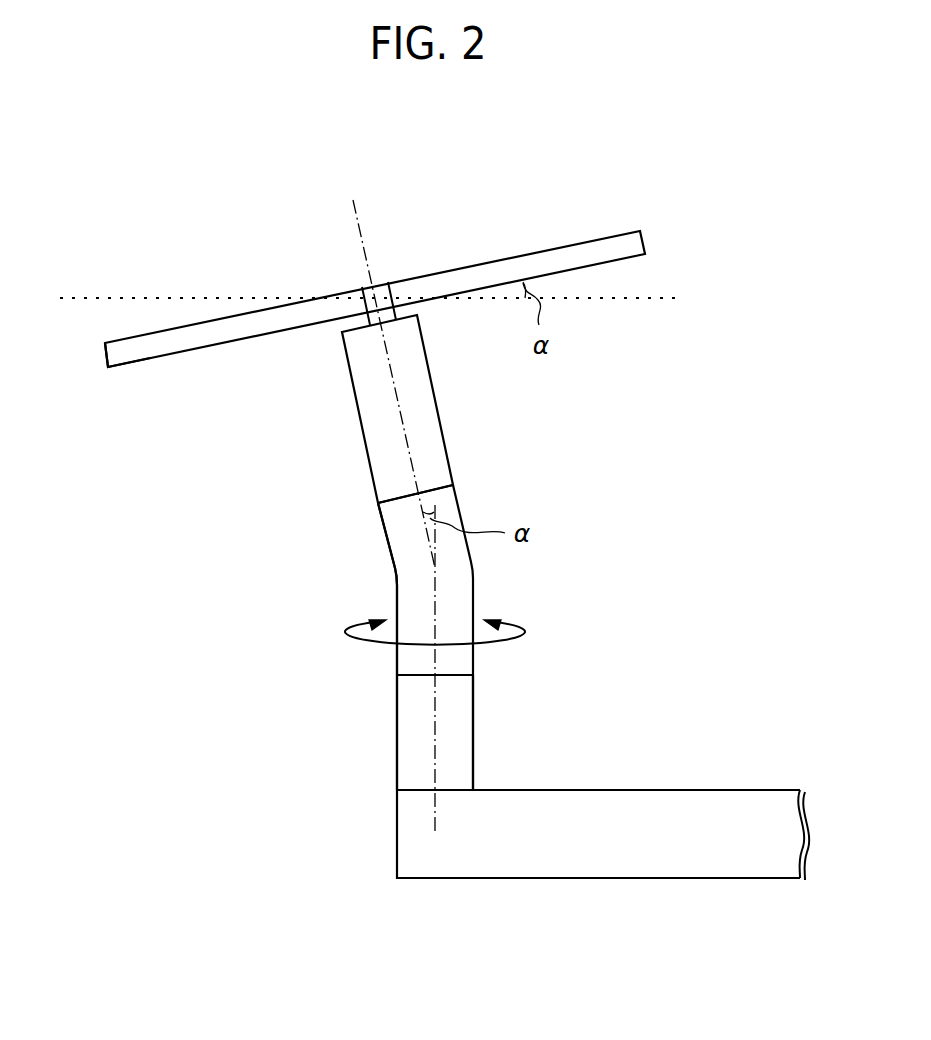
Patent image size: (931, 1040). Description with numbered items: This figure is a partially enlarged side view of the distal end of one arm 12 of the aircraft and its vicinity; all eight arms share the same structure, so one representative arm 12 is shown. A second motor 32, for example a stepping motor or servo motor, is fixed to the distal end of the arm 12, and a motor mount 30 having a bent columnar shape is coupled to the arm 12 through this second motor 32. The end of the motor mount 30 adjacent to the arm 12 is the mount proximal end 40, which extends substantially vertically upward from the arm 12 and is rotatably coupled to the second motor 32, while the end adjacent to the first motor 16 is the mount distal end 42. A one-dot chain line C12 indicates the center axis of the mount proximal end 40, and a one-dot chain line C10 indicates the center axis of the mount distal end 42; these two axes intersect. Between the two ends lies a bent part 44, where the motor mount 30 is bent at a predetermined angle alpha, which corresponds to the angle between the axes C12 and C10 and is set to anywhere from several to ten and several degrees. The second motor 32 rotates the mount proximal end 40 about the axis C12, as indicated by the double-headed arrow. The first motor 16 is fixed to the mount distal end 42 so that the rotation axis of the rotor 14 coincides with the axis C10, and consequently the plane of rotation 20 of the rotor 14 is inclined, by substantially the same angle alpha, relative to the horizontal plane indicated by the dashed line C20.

The arm 12 is at (625, 790).
The rotor 14 is at (143, 362).
The first motor 16 is at (361, 418).
The plane of rotation 20 is at (600, 240).
The motor mount 30 is at (476, 600).
The second motor 32 is at (397, 740).
The mount proximal end 40 is at (397, 673).
The mount distal end 42 is at (381, 511).
The bent part 44 is at (397, 591).
The one-dot chain line (center axis of mount distal end) C10 is at (425, 504).
The one-dot chain line (center axis of mount proximal end) C12 is at (437, 654).
The dashed line (horizontal plane) C20 is at (614, 300).